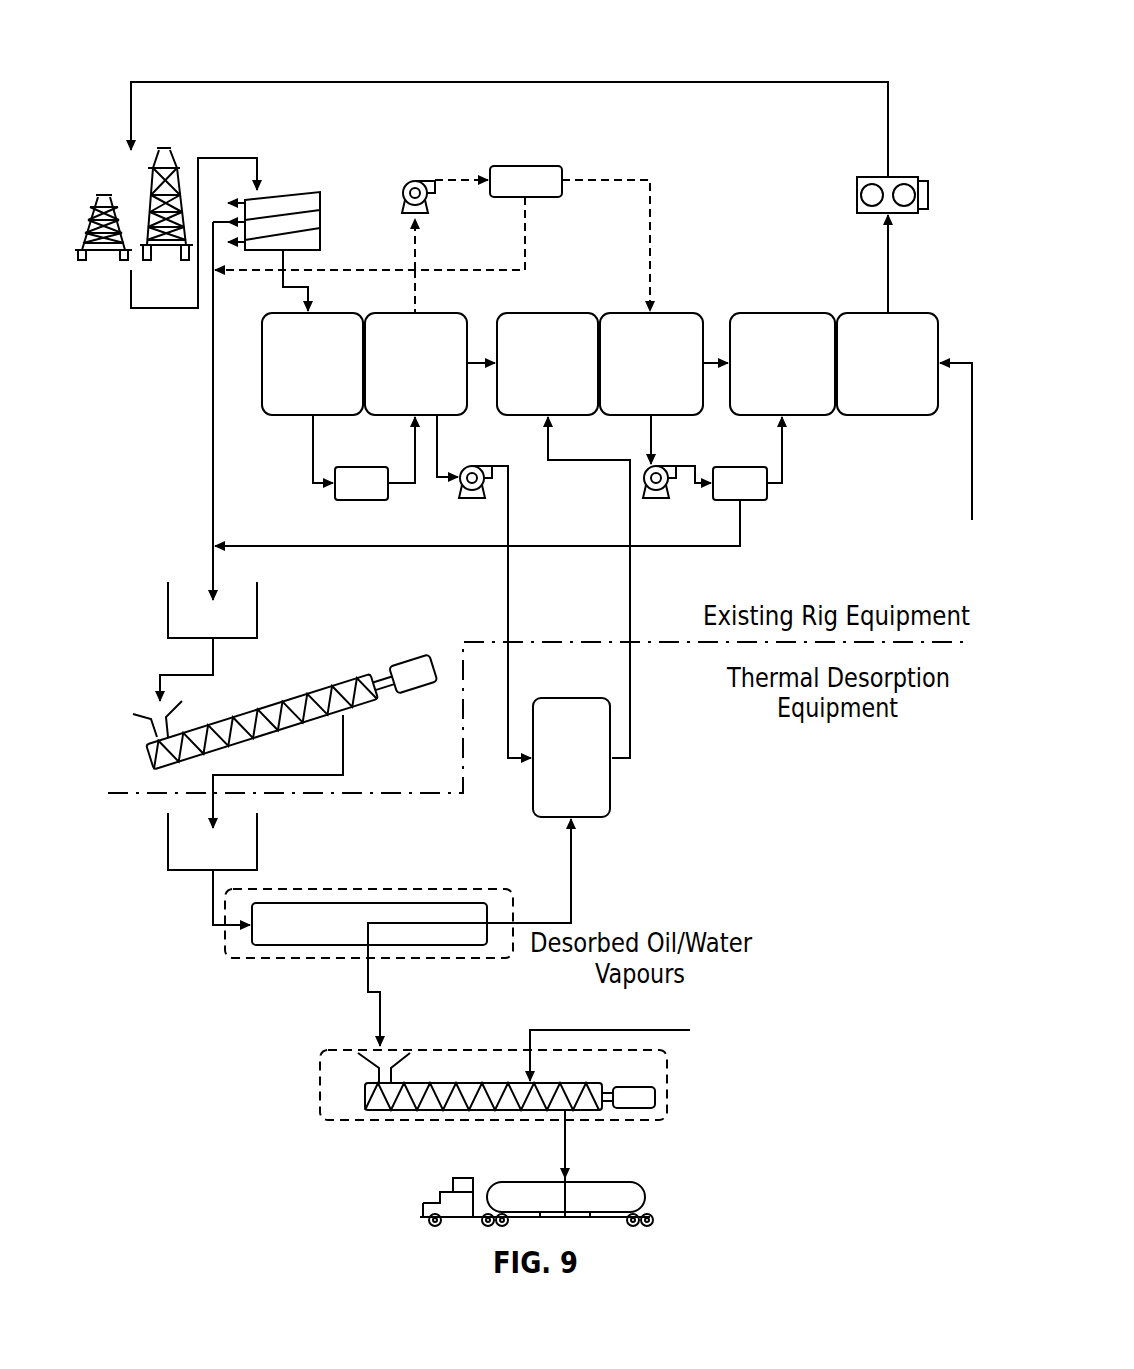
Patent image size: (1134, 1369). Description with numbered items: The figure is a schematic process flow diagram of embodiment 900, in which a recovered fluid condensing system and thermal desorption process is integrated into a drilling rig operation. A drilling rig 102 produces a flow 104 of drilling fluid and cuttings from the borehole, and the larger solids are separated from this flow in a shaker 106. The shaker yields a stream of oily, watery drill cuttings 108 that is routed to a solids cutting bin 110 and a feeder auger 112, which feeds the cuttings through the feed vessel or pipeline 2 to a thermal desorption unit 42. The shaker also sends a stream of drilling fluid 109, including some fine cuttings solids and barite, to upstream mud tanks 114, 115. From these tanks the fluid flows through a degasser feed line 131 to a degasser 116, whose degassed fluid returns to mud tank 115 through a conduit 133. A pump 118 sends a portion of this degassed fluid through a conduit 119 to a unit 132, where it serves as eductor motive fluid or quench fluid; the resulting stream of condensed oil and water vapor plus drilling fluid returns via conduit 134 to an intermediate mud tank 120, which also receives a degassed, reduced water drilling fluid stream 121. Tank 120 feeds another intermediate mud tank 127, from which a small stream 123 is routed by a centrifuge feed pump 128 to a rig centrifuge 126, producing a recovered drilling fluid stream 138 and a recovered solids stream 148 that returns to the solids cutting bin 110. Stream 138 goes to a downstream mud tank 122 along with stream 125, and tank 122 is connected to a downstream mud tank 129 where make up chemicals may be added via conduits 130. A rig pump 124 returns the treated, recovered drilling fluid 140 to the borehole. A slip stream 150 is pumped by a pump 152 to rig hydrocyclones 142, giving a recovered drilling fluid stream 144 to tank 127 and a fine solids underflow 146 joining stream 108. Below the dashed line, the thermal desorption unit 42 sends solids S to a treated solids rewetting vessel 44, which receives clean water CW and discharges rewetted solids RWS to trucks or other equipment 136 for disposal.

The embodiment 900 is at (745, 27).
The drilling rig 102 is at (177, 167).
The flow of drilling fluid and cuttings 104 is at (138, 322).
The shaker 106 is at (293, 192).
The stream of oily, watery drill cuttings 108 is at (212, 378).
The stream of drilling fluid 109 is at (283, 287).
The solids cutting bin 110 is at (168, 608).
The feeder auger 112 is at (367, 710).
The upstream mud tank 114 is at (260, 365).
The upstream mud tank 115 is at (397, 313).
The degasser 116 is at (362, 500).
The pump 118 is at (472, 498).
The conduit 119 is at (508, 628).
The intermediate mud tank 120 is at (545, 313).
The degassed, reduced water drilling fluid stream 121 is at (473, 362).
The downstream mud tank 122 is at (785, 313).
The stream 123 is at (655, 423).
The rig pump 124 is at (857, 195).
The stream 125 is at (710, 362).
The rig centrifuge 126 is at (760, 500).
The intermediate mud tank 127 is at (638, 417).
The centrifuge feed pump 128 is at (657, 498).
The downstream mud tank 129 is at (905, 313).
The conduit 130 is at (970, 465).
The degasser feed line 131 is at (310, 442).
The unit 132 is at (610, 800).
The conduit 133 is at (413, 452).
The conduit 134 is at (630, 723).
The trucks or other equipment 136 is at (647, 1190).
The recovered drilling fluid stream 138 is at (782, 463).
The stream of treated, recovered drilling fluid 140 is at (510, 81).
The rig hydrocyclones 142 is at (525, 166).
The recovered drilling fluid stream 144 is at (615, 180).
The fine solids underflow stream 146 is at (528, 250).
The recovered solids stream 148 is at (708, 548).
The slip stream 150 is at (418, 250).
The pump 152 is at (425, 177).
The feed vessel or pipeline 2 is at (168, 832).
The thermal desorption unit 42 is at (225, 945).
The treated solids rewetting vessel 44 is at (667, 1102).
The solids S is at (368, 990).
The clean water CW is at (635, 1048).
The rewetted solids RWS is at (565, 1135).